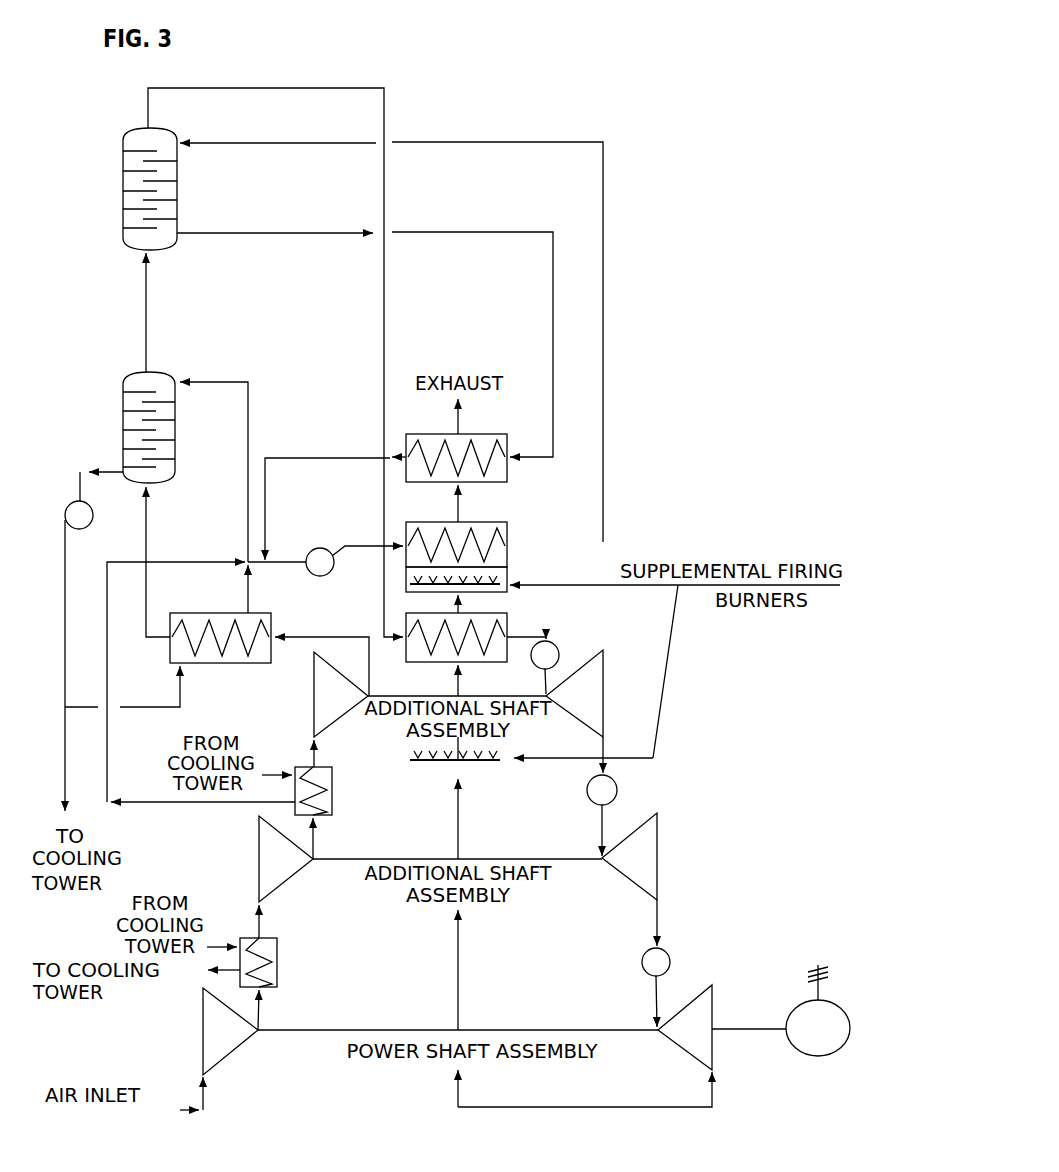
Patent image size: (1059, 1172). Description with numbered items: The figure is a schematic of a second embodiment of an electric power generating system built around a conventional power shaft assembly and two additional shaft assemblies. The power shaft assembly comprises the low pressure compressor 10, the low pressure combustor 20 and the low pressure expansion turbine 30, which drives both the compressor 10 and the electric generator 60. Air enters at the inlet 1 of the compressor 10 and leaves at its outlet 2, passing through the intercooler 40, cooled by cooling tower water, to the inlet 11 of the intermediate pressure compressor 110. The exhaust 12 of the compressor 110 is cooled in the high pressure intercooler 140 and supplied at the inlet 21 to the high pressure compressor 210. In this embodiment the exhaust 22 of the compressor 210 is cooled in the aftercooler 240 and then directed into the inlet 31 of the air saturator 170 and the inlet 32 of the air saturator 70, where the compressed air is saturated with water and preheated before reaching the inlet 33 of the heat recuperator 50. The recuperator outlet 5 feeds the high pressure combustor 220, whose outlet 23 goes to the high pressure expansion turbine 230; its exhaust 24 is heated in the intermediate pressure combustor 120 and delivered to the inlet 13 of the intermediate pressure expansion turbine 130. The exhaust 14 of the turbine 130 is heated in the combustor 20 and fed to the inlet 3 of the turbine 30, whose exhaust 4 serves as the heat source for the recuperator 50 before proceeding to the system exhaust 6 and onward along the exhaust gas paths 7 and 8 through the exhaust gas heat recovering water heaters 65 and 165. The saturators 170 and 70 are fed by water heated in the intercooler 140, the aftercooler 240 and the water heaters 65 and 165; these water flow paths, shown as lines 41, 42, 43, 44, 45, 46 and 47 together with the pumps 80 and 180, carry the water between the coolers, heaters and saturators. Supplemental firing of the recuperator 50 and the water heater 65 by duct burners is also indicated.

The inlet 1 is at (205, 1102).
The outlet 2 is at (262, 1017).
The inlet 3 is at (655, 1000).
The exhaust 4 is at (620, 1110).
The outlet 5 is at (513, 635).
The system exhaust 6 is at (458, 605).
The flue gas stream to heat exchanger 165 7 is at (458, 507).
The exhaust stream 8 is at (457, 422).
The compressor 10 is at (198, 1031).
The inlet 11 is at (260, 922).
The exhaust 12 is at (323, 838).
The inlet 13 is at (598, 827).
The exhaust 14 is at (655, 920).
The combustor 20 is at (673, 958).
The inlet 21 is at (325, 752).
The exhaust 22 is at (375, 680).
The outlet 23 is at (542, 682).
The exhaust 24 is at (600, 744).
The expansion turbine 30 is at (715, 1007).
The inlet 31 is at (147, 535).
The inlet 32 is at (145, 285).
The inlet 33 is at (384, 130).
The intercooler 40 is at (280, 957).
The cooling water stream 41 is at (108, 742).
The heated stream from heat exchanger 240 42 is at (255, 603).
The stream to absorber 170 43 is at (203, 383).
The stream from pump 180 44 is at (349, 549).
The stream from heat exchanger 65 45 is at (600, 515).
The stream from regenerator 70 to heat exchanger 165 46 is at (450, 236).
The stream from heat exchanger 165 47 is at (313, 458).
The heat recuperator 50 is at (502, 613).
The electric generator 60 is at (840, 1003).
The exhaust gas heat recovering water heater 65 is at (503, 522).
The air saturator 70 is at (178, 190).
The pump 80 is at (93, 513).
The intermediate pressure compressor 110 is at (258, 855).
The intermediate pressure combustor 120 is at (617, 785).
The intermediate pressure expansion turbine 130 is at (658, 837).
The high pressure intercooler 140 is at (335, 792).
The exhaust gas heat recovering water heater 165 is at (500, 434).
The air saturator 170 is at (177, 445).
The pump 180 is at (318, 547).
The high pressure compressor 210 is at (313, 700).
The high pressure combustor 220 is at (557, 645).
The high pressure expansion turbine 230 is at (603, 678).
The aftercooler 240 is at (207, 665).